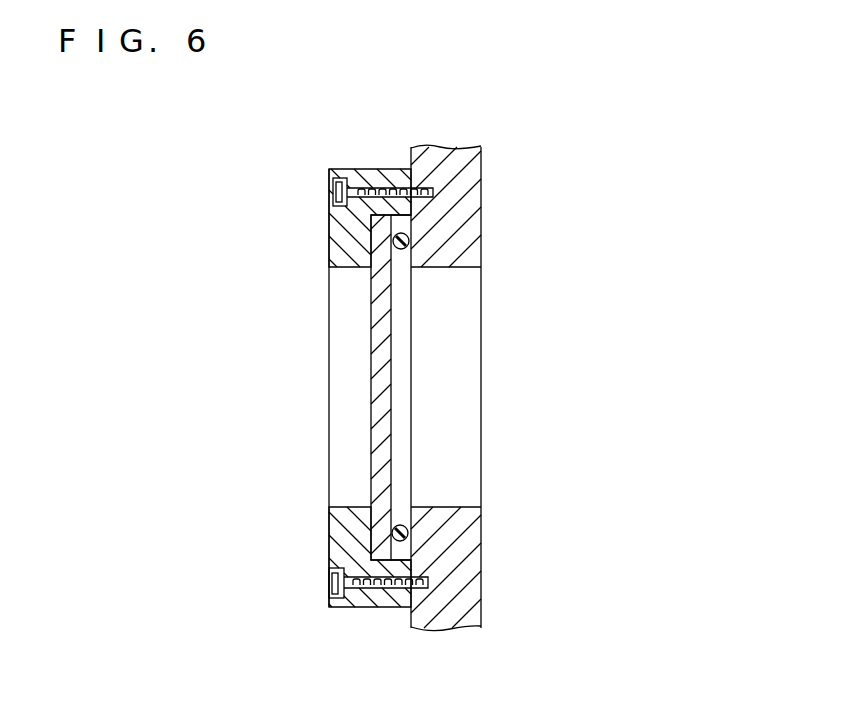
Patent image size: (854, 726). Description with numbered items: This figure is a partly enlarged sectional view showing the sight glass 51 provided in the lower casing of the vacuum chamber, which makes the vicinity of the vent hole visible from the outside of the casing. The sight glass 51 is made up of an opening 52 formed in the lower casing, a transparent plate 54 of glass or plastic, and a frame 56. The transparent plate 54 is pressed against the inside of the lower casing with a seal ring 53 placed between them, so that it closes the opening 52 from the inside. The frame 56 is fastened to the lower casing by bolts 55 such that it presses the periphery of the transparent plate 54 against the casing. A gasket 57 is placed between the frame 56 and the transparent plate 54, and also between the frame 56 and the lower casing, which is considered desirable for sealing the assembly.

The sight glass 51 is at (458, 315).
The opening 52 is at (472, 360).
The seal ring 53 is at (405, 241).
The transparent plate 54 is at (383, 370).
The bolts 55 is at (330, 192).
The frame 56 is at (338, 237).
The gasket 57 is at (393, 169).